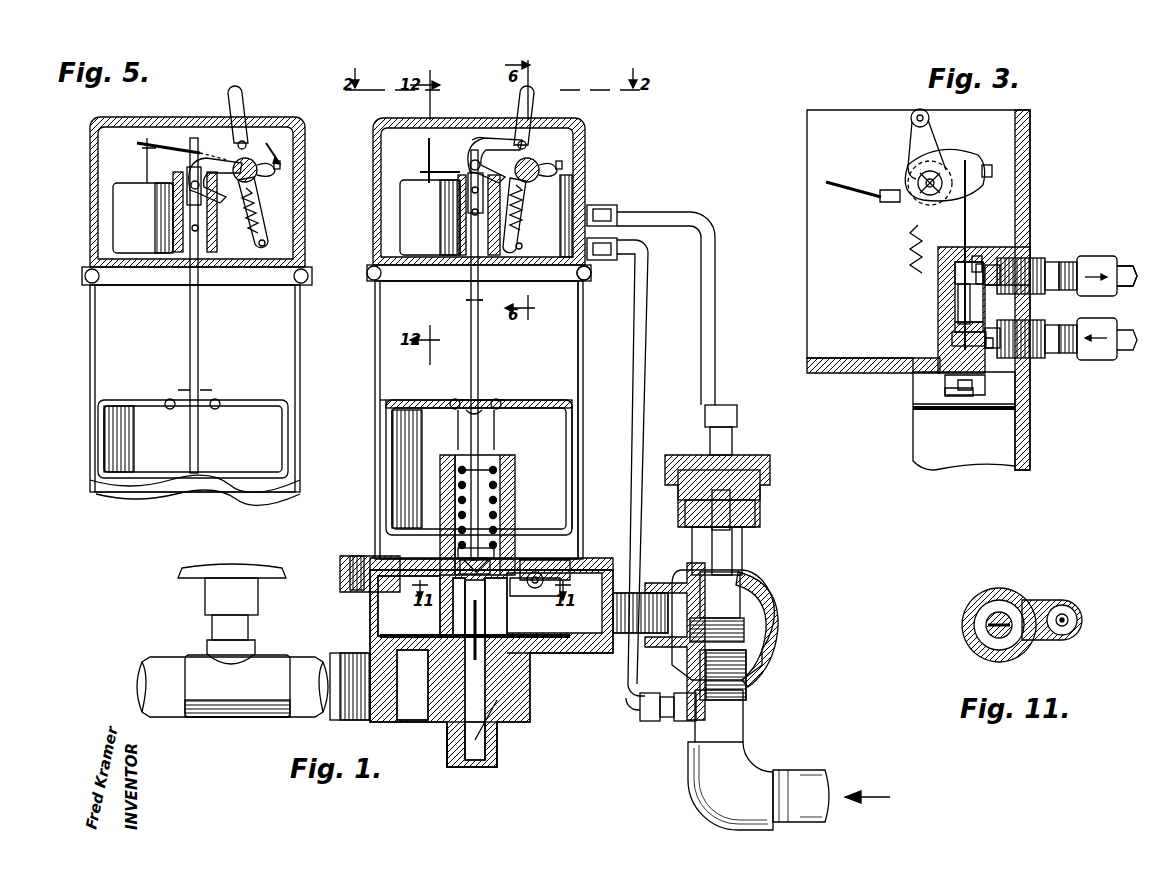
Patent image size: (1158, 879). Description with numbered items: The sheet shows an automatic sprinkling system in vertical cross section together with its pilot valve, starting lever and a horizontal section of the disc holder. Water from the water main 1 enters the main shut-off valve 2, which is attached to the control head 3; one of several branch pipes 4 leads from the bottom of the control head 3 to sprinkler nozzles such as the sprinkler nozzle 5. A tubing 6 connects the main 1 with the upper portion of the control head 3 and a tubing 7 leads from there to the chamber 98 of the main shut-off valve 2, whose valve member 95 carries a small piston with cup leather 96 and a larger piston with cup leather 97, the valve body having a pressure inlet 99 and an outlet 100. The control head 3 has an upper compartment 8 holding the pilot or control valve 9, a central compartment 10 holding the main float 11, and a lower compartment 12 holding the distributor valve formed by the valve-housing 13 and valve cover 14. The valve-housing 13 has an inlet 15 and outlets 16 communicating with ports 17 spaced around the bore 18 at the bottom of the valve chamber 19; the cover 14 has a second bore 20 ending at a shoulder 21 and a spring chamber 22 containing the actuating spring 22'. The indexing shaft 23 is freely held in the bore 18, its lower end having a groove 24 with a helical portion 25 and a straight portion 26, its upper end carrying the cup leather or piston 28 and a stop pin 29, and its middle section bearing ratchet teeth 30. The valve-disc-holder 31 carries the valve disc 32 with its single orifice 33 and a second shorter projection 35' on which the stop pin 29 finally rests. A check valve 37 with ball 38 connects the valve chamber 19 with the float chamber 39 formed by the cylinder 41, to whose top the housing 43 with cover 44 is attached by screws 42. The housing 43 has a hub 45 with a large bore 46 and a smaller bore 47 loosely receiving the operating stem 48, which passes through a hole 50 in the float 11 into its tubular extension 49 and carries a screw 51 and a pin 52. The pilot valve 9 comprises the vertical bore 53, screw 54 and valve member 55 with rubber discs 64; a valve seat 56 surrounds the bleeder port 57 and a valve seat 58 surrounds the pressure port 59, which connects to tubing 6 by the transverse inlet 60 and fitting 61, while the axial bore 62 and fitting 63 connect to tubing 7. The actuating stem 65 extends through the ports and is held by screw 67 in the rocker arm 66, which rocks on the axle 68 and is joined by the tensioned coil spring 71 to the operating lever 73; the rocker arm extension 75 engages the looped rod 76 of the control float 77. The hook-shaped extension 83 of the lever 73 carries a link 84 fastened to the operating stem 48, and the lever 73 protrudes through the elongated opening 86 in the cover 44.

In FIG. 1, the water main 1 is at (742, 725).
In FIG. 1, the main shut-off valve 2 is at (762, 628).
In FIG. 1, the control head 3 is at (375, 393).
In FIG. 1, the branch pipe 4 is at (330, 708).
In FIG. 1, the sprinkler nozzle 5 is at (218, 562).
In FIG. 1, the tubing 6 is at (644, 410).
In FIG. 3, the tubing 6 is at (1122, 360).
In FIG. 1, the tubing 7 is at (728, 342).
In FIG. 3, the tubing 7 is at (1126, 266).
In FIG. 1, the upper compartment 8 is at (375, 165).
In FIG. 3, the pilot or control valve 9 is at (936, 262).
In FIG. 1, the central compartment 10 is at (582, 326).
In FIG. 1, the main float 11 is at (550, 402).
In FIG. 1, the lower compartment 12 is at (362, 594).
In FIG. 1, the valve-housing 13 is at (370, 612).
In FIG. 1, the valve cover 14 is at (346, 556).
In FIG. 1, the inlet 15 is at (602, 650).
In FIG. 1, the outlet 16 is at (414, 706).
In FIG. 1, the port 17 is at (383, 655).
In FIG. 1, the bore 18 is at (492, 752).
In FIG. 1, the valve chamber 19 is at (409, 606).
In FIG. 1, the second bore 20 is at (510, 522).
In FIG. 1, the shoulder 21 is at (512, 508).
In FIG. 1, the spring chamber 22 is at (507, 505).
In FIG. 1, the actuating spring 22' is at (509, 456).
In FIG. 1, the indexing shaft 23 is at (452, 715).
In FIG. 1, the groove 24 is at (492, 704).
In FIG. 1, the helical portion 25 is at (498, 728).
In FIG. 1, the straight portion 26 is at (490, 681).
In FIG. 1, the cup leather or piston 28 is at (448, 548).
In FIG. 1, the stop pin 29 is at (520, 562).
In FIG. 11, the stop pin 29 is at (974, 644).
In FIG. 1, the ratchet teeth 30 is at (486, 662).
In FIG. 1, the valve-disc-holder 31 is at (460, 615).
In FIG. 1, the valve disc 32 is at (554, 646).
In FIG. 1, the orifice or opening 33 is at (380, 635).
In FIG. 1, the second shorter projection 35' is at (535, 601).
In FIG. 11, the second shorter projection 35' is at (1038, 599).
In FIG. 1, the check valve 37 is at (554, 554).
In FIG. 1, the ball 38 is at (544, 576).
In FIG. 11, the ball 38 is at (1070, 618).
In FIG. 1, the float chamber 39 is at (488, 373).
In FIG. 1, the cylinder 41 is at (580, 382).
In FIG. 1, the screw 42 is at (588, 278).
In FIG. 1, the housing 43 is at (583, 152).
In FIG. 1, the cover 44 is at (480, 118).
In FIG. 1, the hub 45 is at (534, 220).
In FIG. 1, the large bore 46 is at (472, 209).
In FIG. 1, the smaller bore 47 is at (400, 282).
In FIG. 1, the operating stem 48 is at (471, 330).
In FIG. 1, the tubular extension 49 is at (465, 430).
In FIG. 1, the hole 50 is at (482, 402).
In FIG. 1, the screw 51 is at (484, 426).
In FIG. 1, the pin 52 is at (466, 296).
In FIG. 3, the vertical bore 53 is at (956, 294).
In FIG. 3, the screw 54 is at (942, 384).
In FIG. 3, the valve member 55 is at (953, 282).
In FIG. 3, the valve seat 56 is at (978, 262).
In FIG. 3, the bleeder port 57 is at (978, 248).
In FIG. 3, the valve seat 58 is at (955, 318).
In FIG. 3, the pressure port 59 is at (957, 337).
In FIG. 3, the transverse inlet 60 is at (996, 348).
In FIG. 3, the fitting 61 is at (1092, 364).
In FIG. 3, the axial bore 62 is at (1020, 250).
In FIG. 3, the fitting 63 is at (1092, 256).
In FIG. 3, the disc 64 is at (962, 250).
In FIG. 3, the actuating stem 65 is at (972, 198).
In FIG. 3, the rocker arm 66 is at (908, 135).
In FIG. 3, the screw 67 is at (992, 168).
In FIG. 3, the axle 68 is at (935, 174).
In FIG. 5, the coil spring 71 is at (246, 204).
In FIG. 3, the coil spring 71 is at (918, 221).
In FIG. 5, the operating lever 73 is at (242, 98).
In FIG. 1, the operating lever 73 is at (540, 102).
In FIG. 5, the extension 75 is at (164, 140).
In FIG. 1, the extension 75 is at (428, 162).
In FIG. 3, the extension 75 is at (854, 182).
In FIG. 5, the looped rod 76 is at (122, 160).
In FIG. 5, the control float 77 is at (108, 221).
In FIG. 1, the control float 77 is at (399, 207).
In FIG. 1, the hook-shaped extension 83 is at (474, 138).
In FIG. 1, the link 84 is at (468, 183).
In FIG. 1, the elongated opening 86 is at (526, 122).
In FIG. 1, the valve member 95 is at (766, 602).
In FIG. 1, the cup leather 96 is at (743, 558).
In FIG. 1, the cup leather 97 is at (758, 500).
In FIG. 1, the chamber 98 is at (719, 484).
In FIG. 1, the pressure inlet 99 is at (746, 668).
In FIG. 1, the outlet 100 is at (656, 584).